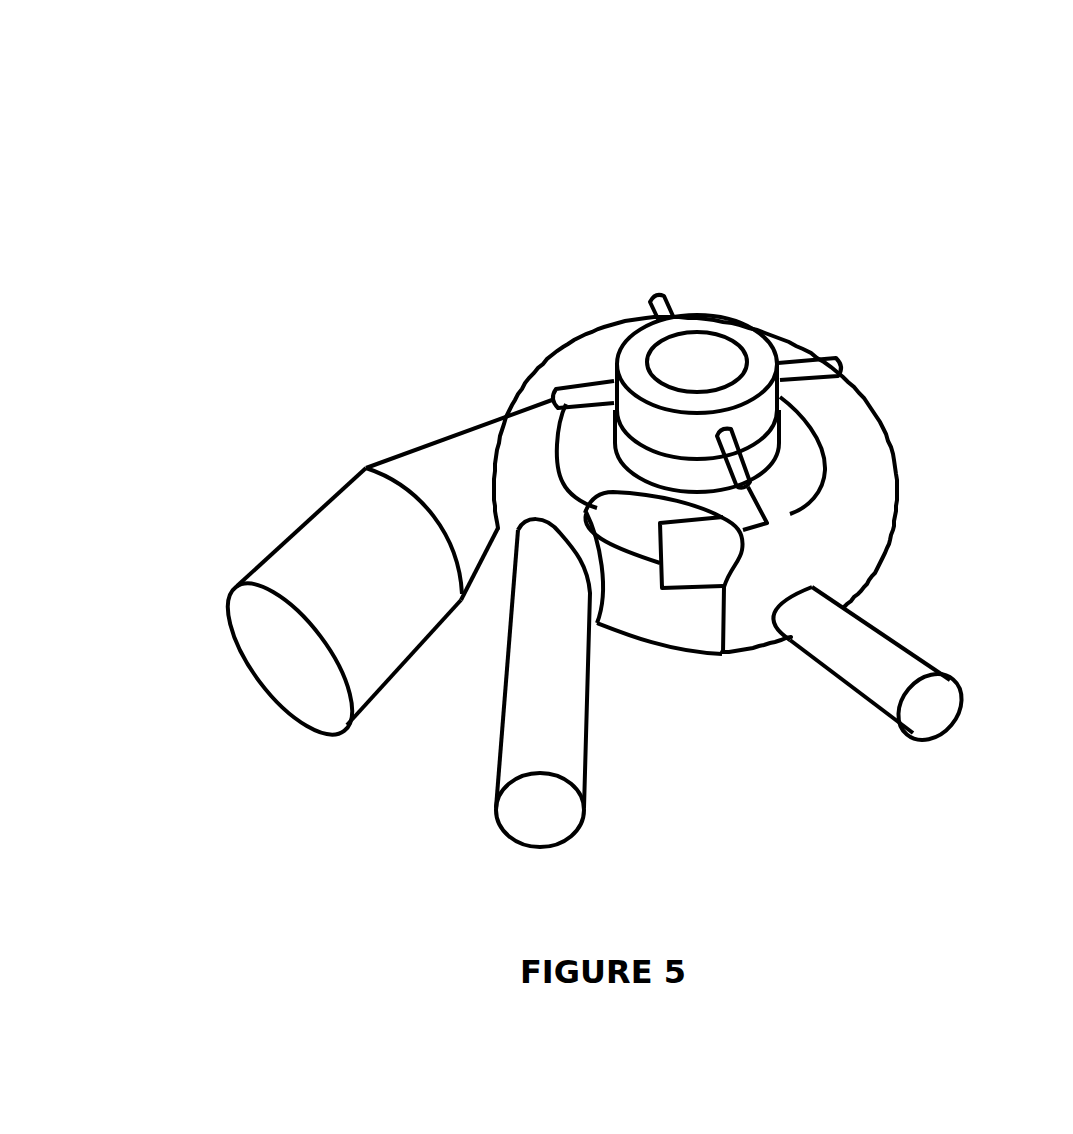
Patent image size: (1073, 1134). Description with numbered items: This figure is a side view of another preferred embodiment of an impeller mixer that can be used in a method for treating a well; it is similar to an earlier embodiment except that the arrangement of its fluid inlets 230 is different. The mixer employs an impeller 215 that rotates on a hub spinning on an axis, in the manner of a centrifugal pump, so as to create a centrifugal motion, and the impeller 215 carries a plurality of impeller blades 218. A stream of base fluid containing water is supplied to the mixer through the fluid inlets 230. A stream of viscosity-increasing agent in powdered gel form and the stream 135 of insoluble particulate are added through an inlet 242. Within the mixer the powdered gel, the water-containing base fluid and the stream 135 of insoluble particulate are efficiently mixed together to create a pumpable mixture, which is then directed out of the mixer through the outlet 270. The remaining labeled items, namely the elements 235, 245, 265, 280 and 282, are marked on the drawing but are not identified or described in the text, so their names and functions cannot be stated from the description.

The stream of insoluble particulate 135 is at (670, 360).
The impeller 215 is at (607, 511).
The impeller blades 218 is at (677, 568).
The fluid inlet 230 is at (530, 655).
The pin 235 is at (658, 288).
The inlet 242 is at (755, 335).
The central bore 245 is at (696, 358).
The axis 265 is at (310, 627).
The outlet 270 is at (307, 557).
The hub 280 is at (633, 413).
The annular ring 282 is at (840, 367).